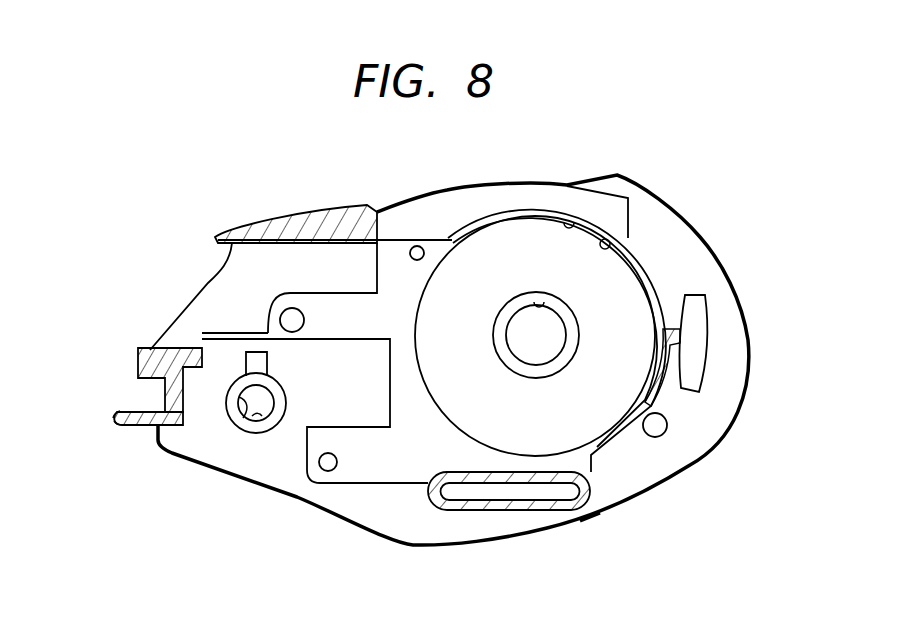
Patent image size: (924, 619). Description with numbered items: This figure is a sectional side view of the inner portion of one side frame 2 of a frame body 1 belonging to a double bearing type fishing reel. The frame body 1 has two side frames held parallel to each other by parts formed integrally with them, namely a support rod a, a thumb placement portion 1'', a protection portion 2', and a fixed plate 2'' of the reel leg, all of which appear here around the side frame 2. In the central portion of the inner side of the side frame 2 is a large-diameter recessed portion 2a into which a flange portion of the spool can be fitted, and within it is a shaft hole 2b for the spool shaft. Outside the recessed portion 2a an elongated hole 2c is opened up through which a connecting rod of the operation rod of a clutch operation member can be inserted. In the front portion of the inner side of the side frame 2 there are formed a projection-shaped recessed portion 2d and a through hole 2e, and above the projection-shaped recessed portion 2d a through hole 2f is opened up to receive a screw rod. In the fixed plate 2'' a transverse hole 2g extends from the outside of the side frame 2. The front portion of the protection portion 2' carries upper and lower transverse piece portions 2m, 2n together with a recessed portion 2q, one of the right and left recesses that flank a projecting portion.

The frame body 1 is at (453, 329).
The side frame 2 is at (441, 324).
The thumb placement portion 1'' is at (296, 194).
The large-diameter recessed portion 2a is at (570, 218).
The shaft hole 2b is at (538, 300).
The elongated hole 2c is at (700, 308).
The support rod a is at (690, 349).
The through hole 2f is at (290, 322).
The upper transverse piece portion 2m is at (140, 352).
The lower transverse piece portion 2n is at (127, 427).
The recessed portion 2q is at (116, 410).
The protection portion 2' is at (79, 433).
The projection-shaped recessed portion 2d is at (239, 414).
The through hole 2e is at (258, 428).
The transverse hole 2g is at (557, 512).
The fixed plate 2'' is at (597, 556).